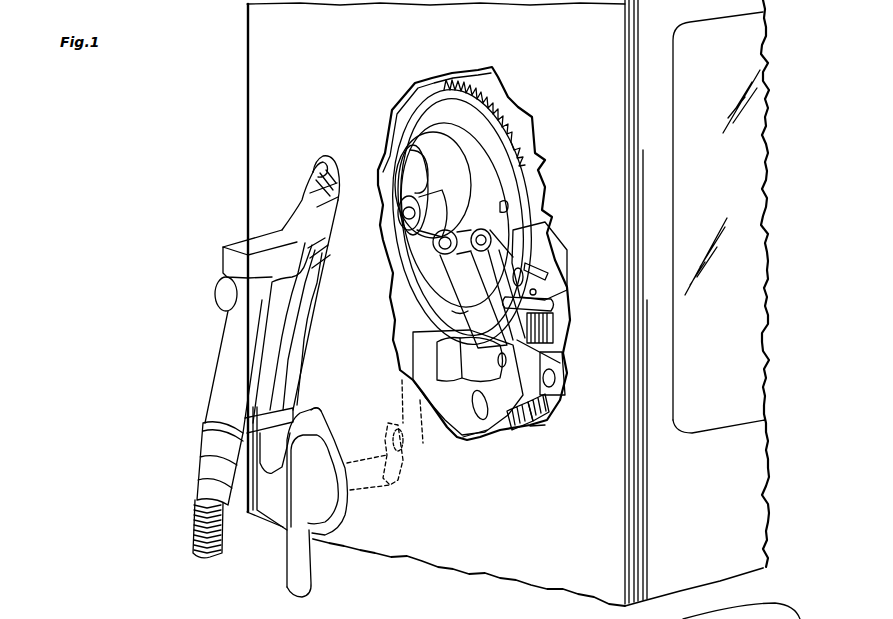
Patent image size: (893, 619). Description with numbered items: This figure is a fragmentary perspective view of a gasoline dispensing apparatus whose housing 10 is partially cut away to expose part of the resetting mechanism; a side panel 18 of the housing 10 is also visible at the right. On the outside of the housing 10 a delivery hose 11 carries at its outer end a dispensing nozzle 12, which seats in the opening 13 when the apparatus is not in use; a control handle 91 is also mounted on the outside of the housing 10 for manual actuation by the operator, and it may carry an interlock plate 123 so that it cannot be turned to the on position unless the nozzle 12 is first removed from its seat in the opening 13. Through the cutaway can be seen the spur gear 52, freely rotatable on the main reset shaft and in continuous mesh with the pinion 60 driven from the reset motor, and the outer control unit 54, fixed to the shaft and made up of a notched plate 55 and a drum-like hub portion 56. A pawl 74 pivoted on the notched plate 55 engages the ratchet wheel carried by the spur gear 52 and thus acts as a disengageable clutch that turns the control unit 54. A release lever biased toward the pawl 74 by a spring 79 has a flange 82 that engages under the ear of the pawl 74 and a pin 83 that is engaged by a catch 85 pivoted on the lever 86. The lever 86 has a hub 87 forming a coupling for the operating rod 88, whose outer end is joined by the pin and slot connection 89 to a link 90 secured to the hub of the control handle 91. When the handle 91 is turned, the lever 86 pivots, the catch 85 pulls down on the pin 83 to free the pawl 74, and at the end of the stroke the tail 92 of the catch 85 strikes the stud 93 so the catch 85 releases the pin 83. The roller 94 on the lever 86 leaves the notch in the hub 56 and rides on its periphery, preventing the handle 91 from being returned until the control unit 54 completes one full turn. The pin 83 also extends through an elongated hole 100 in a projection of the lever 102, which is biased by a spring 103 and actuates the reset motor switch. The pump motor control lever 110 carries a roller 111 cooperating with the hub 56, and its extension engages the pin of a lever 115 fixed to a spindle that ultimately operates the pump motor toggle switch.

The housing 10 is at (332, 61).
The delivery hose 11 is at (193, 543).
The dispensing nozzle 12 is at (228, 343).
The opening 13 is at (313, 172).
The side panel 18 is at (750, 378).
The spur gear 52 is at (520, 153).
The control unit 54 is at (458, 119).
The notched plate 55 is at (493, 127).
The drum-like hub portion 56 is at (470, 173).
The pinion 60 is at (512, 95).
The pawl 74 is at (558, 255).
The spring 79 is at (532, 428).
The flange 82 is at (550, 270).
The pin 83 is at (532, 292).
The catch 85 is at (503, 294).
The lever 86 is at (457, 313).
The hub 87 is at (465, 383).
The operating rod 88 is at (412, 357).
The pin and slot connection 89 is at (408, 456).
The link 90 is at (396, 481).
The control handle 91 is at (290, 547).
The tail 92 is at (555, 414).
The stud 93 is at (552, 401).
The roller 94 is at (475, 213).
The elongated hole 100 is at (555, 302).
The lever 102 is at (556, 322).
The spring 103 is at (513, 430).
The pump motor control lever 110 is at (480, 277).
The roller 111 is at (499, 208).
The lever 115 is at (562, 380).
The interlock plate 123 is at (320, 415).